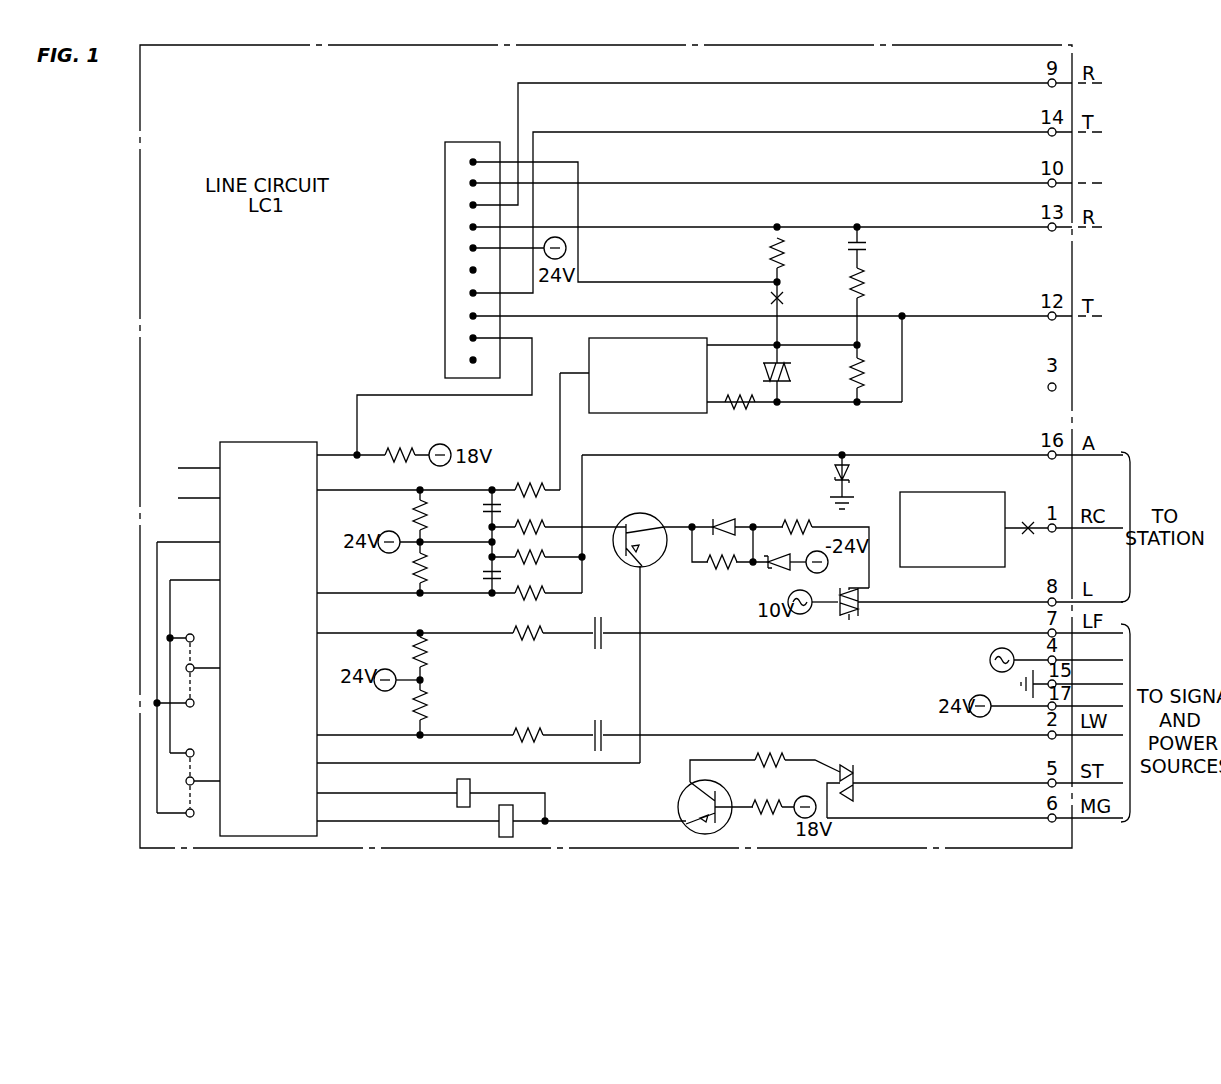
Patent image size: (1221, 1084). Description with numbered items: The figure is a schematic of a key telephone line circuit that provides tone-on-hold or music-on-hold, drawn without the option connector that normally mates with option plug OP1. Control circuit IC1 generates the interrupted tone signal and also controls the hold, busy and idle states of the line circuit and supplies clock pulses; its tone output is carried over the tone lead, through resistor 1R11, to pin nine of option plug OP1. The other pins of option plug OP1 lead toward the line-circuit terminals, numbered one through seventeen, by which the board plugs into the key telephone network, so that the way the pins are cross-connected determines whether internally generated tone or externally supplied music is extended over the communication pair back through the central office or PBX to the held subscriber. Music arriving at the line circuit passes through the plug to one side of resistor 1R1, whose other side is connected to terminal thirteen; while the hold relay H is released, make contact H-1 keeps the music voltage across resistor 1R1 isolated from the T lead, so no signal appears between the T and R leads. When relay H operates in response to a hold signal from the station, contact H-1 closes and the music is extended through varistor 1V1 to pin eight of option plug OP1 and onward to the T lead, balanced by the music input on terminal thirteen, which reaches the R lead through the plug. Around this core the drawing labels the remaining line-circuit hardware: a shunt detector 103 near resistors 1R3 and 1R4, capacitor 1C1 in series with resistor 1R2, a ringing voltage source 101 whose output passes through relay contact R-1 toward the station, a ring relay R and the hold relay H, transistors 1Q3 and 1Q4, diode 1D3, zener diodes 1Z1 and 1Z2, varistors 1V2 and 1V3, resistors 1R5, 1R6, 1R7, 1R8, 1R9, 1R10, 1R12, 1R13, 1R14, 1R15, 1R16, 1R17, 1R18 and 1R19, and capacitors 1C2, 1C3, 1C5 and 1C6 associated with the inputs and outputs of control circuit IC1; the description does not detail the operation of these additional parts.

The ringing voltage source 101 is at (955, 492).
The shunt detector 103 is at (643, 413).
The option plug OP1 is at (485, 142).
The control circuit IC1 is at (300, 442).
The resistor 1R1 is at (764, 254).
The resistor 1R2 is at (867, 285).
The resistor 1R3 is at (870, 366).
The resistor 1R4 is at (752, 410).
The resistor 1R5 is at (799, 520).
The resistor 1R6 is at (720, 572).
The resistor 1R7 is at (526, 484).
The resistor 1R8 is at (535, 523).
The resistor 1R9 is at (535, 554).
The resistor 1R10 is at (530, 586).
The resistor 1R11 is at (391, 450).
The resistor 1R12 is at (407, 514).
The resistor 1R13 is at (408, 572).
The resistor 1R14 is at (525, 640).
The resistor 1R15 is at (517, 728).
The resistor 1R16 is at (427, 652).
The resistor 1R17 is at (427, 705).
The resistor 1R18 is at (776, 756).
The resistor 1R19 is at (764, 812).
The capacitor 1C1 is at (867, 247).
The capacitor 1C2 is at (599, 644).
The capacitor 1C3 is at (598, 720).
The capacitor 1C5 is at (480, 508).
The capacitor 1C6 is at (480, 575).
The varistor 1V1 is at (760, 374).
The triac 1V2 is at (856, 610).
The triac 1V3 is at (852, 766).
The transistor 1Q3 is at (635, 515).
The transistor 1Q4 is at (690, 786).
The diode 1D3 is at (726, 517).
The zener diode 1Z1 is at (850, 476).
The zener diode 1Z2 is at (778, 572).
The make contact H-1 is at (758, 298).
The relay contact R-1 is at (1027, 522).
The relay R coil R is at (470, 781).
The relay H is at (499, 810).